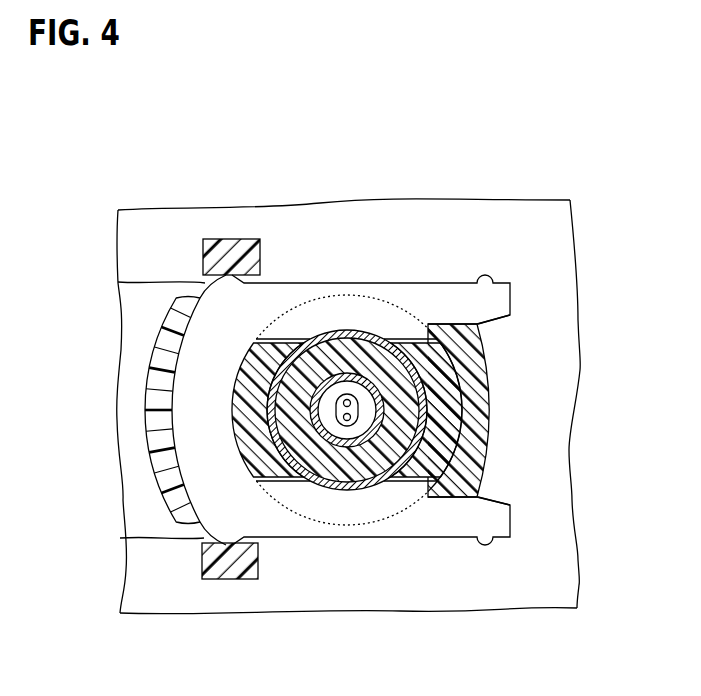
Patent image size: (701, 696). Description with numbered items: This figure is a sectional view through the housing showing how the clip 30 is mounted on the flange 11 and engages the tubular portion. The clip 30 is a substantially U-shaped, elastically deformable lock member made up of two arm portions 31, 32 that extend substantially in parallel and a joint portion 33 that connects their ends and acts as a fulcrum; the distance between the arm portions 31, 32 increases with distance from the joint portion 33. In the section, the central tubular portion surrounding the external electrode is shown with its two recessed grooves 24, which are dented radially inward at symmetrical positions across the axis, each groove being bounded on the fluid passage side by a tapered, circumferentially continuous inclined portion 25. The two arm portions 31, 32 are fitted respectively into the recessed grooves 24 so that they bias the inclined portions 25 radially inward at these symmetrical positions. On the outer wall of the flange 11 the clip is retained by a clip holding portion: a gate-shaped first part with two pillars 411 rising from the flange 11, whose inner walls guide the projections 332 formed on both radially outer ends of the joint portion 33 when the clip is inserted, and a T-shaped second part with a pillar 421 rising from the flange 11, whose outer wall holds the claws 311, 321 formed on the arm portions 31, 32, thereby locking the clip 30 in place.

The flange 11 is at (523, 218).
The clip 30 is at (282, 283).
The projections 332 is at (118, 282).
The pillars 411 is at (232, 239).
The joint portion 33 is at (145, 419).
The pillar 421 is at (489, 408).
The recessed grooves 24 is at (372, 327).
The inclined portion 25 is at (322, 336).
The arm portion 32 is at (352, 306).
The arm portion 31 is at (352, 513).
The claw 321 is at (479, 325).
The claw 311 is at (479, 496).